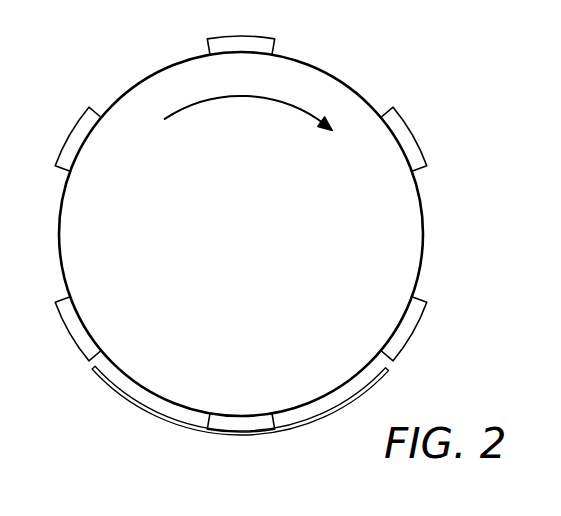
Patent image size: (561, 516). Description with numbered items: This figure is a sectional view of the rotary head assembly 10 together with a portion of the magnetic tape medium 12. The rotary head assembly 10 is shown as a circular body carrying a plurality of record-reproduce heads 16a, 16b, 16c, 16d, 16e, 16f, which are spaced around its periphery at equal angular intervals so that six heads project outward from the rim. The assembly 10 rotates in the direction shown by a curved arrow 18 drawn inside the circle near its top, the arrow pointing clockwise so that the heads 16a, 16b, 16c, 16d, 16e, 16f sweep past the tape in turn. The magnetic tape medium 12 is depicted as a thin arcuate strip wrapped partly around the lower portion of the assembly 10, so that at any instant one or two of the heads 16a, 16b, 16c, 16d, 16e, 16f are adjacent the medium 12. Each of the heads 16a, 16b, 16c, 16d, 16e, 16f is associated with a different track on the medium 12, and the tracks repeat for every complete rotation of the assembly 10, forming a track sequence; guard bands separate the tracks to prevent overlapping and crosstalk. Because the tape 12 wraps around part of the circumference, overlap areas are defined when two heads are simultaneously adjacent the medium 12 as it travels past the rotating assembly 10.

The rotary head assembly 10 is at (413, 222).
The magnetic tape medium 12 is at (147, 415).
The record-reproduce head 16a is at (265, 423).
The record-reproduce head 16b is at (412, 327).
The record-reproduce head 16c is at (402, 130).
The record-reproduce head 16d is at (268, 43).
The record-reproduce head 16e is at (78, 127).
The record-reproduce head 16f is at (78, 333).
The arrow 18 is at (275, 105).